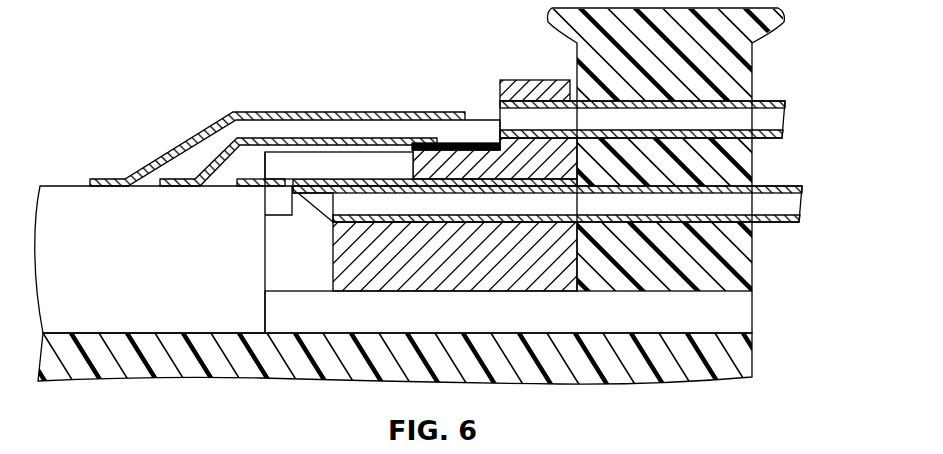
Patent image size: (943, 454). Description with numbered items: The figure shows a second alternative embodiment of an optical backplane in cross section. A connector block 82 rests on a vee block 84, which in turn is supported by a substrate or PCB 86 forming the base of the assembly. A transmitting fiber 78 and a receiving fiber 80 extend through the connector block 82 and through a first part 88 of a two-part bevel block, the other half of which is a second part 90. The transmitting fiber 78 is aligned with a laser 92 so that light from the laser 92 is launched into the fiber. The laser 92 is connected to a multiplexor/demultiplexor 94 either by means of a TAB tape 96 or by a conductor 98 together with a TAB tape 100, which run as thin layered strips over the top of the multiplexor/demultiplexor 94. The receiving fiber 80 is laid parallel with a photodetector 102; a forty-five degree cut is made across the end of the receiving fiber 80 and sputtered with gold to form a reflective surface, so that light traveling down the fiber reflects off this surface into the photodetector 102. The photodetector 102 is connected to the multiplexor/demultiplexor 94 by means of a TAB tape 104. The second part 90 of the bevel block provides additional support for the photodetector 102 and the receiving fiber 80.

The transmitting fiber 78 is at (784, 121).
The receiving fiber 80 is at (803, 202).
The connector block 82 is at (754, 62).
The vee block 84 is at (519, 322).
The substrate or PCB 86 is at (745, 357).
The first part of two-part bevel block 88 is at (546, 80).
The second part of two-part bevel block 90 is at (316, 267).
The laser 92 is at (485, 132).
The multiplexor/demultiplexor 94 is at (176, 287).
The TAB tape 96 is at (182, 145).
The conductor 98 is at (446, 144).
The TAB tape 100 is at (219, 164).
The photodetector 102 is at (347, 165).
The TAB tape 104 is at (245, 180).